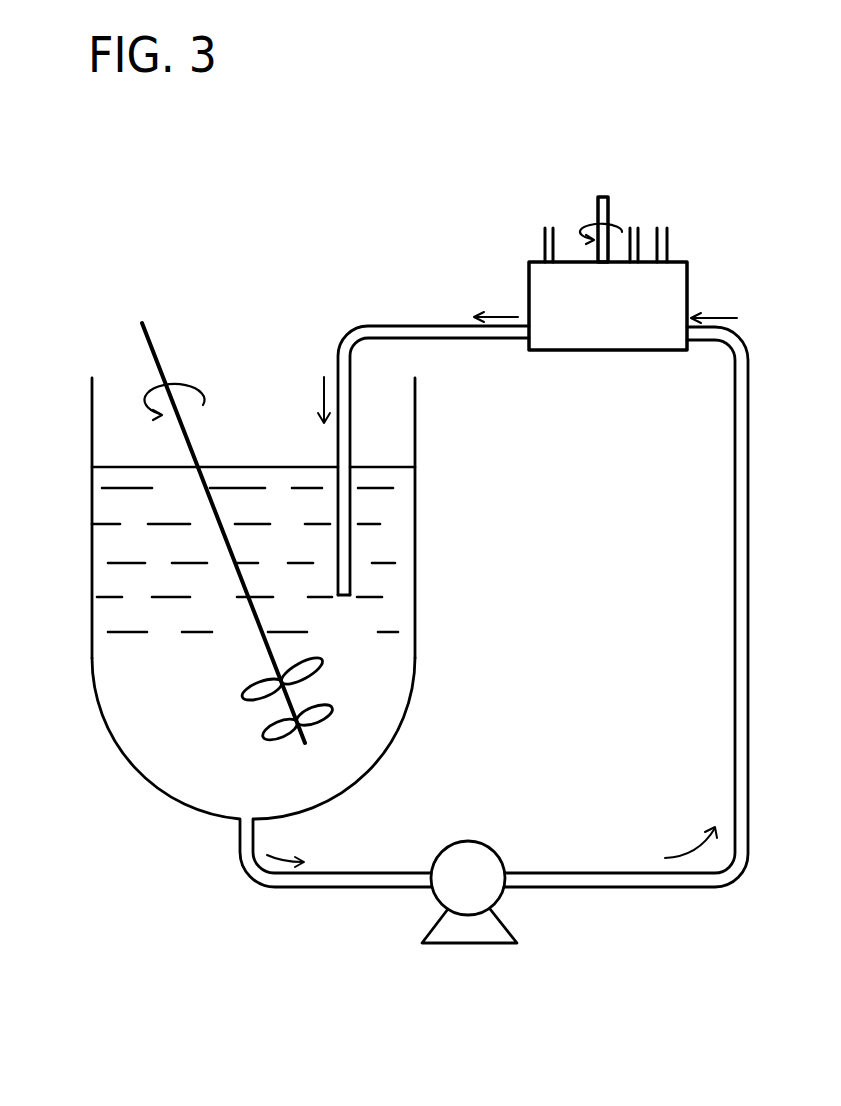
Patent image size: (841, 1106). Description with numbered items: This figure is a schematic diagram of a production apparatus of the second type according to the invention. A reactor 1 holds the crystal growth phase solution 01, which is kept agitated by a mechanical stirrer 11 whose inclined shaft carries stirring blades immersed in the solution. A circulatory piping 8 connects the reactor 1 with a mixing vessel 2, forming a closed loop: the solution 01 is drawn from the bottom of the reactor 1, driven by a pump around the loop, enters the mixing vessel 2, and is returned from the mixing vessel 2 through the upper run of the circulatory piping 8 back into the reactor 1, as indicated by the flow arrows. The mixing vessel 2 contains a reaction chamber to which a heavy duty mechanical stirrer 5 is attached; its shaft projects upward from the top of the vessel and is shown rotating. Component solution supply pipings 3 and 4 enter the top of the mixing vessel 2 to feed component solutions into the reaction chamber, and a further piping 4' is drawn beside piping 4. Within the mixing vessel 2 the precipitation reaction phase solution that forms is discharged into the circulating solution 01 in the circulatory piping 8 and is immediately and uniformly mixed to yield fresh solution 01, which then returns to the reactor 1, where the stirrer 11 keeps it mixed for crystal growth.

The crystal growth phase solution 01 is at (138, 669).
The reactor 1 is at (92, 523).
The mechanical stirrer 11 is at (277, 708).
The mixing vessel 2 is at (600, 350).
The component solution supply piping 3 is at (545, 245).
The component solution supply piping 4 is at (713, 250).
The outlet tube 4' is at (646, 215).
The heavy duty mechanical stirrer 5 is at (598, 210).
The circulatory piping 8 is at (394, 326).